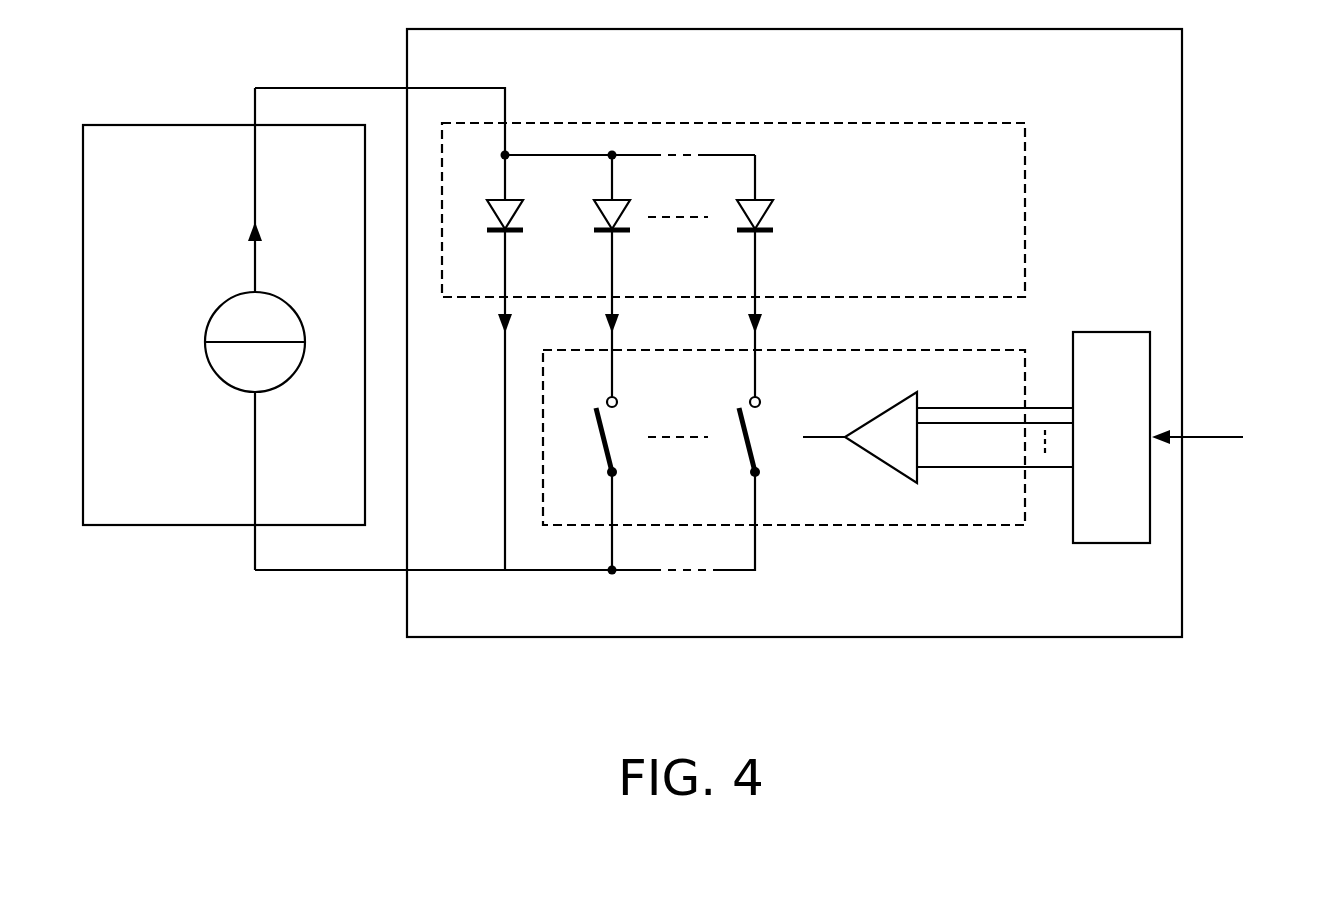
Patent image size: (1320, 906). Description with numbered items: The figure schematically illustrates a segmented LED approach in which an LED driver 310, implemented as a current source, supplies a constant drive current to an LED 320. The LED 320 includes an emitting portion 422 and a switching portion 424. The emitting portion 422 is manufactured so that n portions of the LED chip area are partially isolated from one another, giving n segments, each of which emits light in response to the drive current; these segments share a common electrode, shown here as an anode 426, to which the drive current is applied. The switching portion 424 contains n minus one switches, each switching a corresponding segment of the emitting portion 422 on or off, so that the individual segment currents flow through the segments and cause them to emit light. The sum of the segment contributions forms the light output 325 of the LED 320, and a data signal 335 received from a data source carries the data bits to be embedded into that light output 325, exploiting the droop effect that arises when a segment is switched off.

The LED driver 310 is at (145, 499).
The LED 320 is at (1154, 81).
The light output 325 is at (1134, 454).
The data signal 335 is at (1242, 473).
The emitting portion 422 is at (840, 123).
The switching portion 424 is at (820, 528).
The anode 426 is at (507, 151).